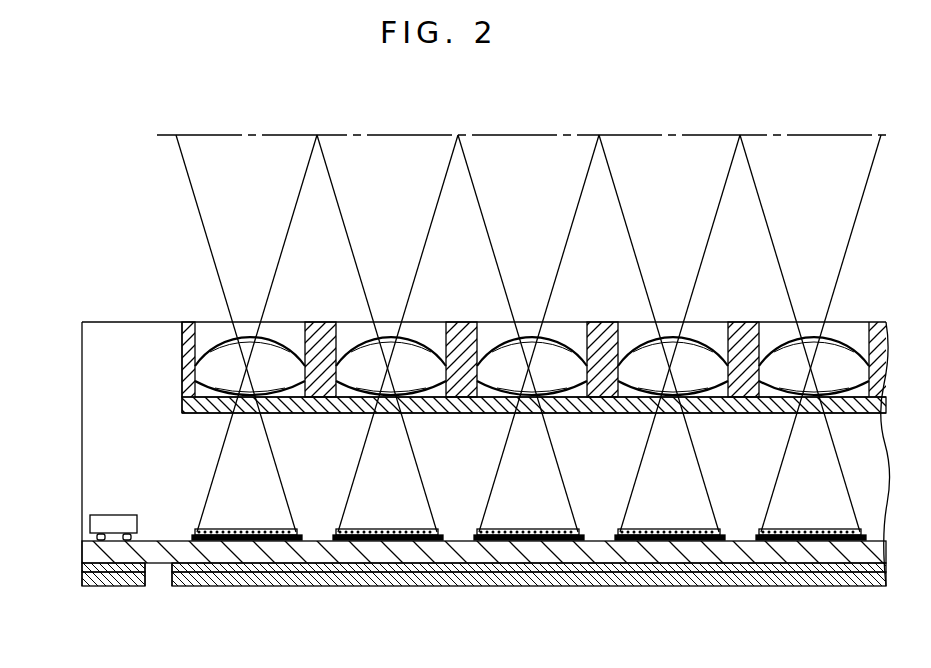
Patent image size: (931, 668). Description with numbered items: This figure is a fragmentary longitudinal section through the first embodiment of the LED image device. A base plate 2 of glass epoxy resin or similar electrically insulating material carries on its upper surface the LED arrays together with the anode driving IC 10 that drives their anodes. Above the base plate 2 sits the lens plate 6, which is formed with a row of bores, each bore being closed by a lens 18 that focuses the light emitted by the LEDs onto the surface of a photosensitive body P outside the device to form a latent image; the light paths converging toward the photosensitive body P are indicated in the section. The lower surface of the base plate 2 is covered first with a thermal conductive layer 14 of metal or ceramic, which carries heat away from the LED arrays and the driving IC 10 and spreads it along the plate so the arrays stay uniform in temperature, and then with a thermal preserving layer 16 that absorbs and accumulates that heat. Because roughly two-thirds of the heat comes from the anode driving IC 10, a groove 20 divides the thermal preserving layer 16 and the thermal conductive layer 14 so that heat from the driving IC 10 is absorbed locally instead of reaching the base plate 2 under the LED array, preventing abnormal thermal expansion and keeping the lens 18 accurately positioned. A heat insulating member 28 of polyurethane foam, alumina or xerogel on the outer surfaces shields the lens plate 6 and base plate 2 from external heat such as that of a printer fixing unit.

The photosensitive body P is at (542, 128).
The lens 18 is at (410, 355).
The lens plate 6 is at (465, 337).
The anode driving IC 10 is at (95, 523).
The base plate 2 is at (256, 552).
The thermal preserving layer 16 is at (306, 567).
The thermal conductive layer 14 is at (380, 578).
The groove 20 is at (158, 570).
The heat insulating member 28 is at (118, 587).